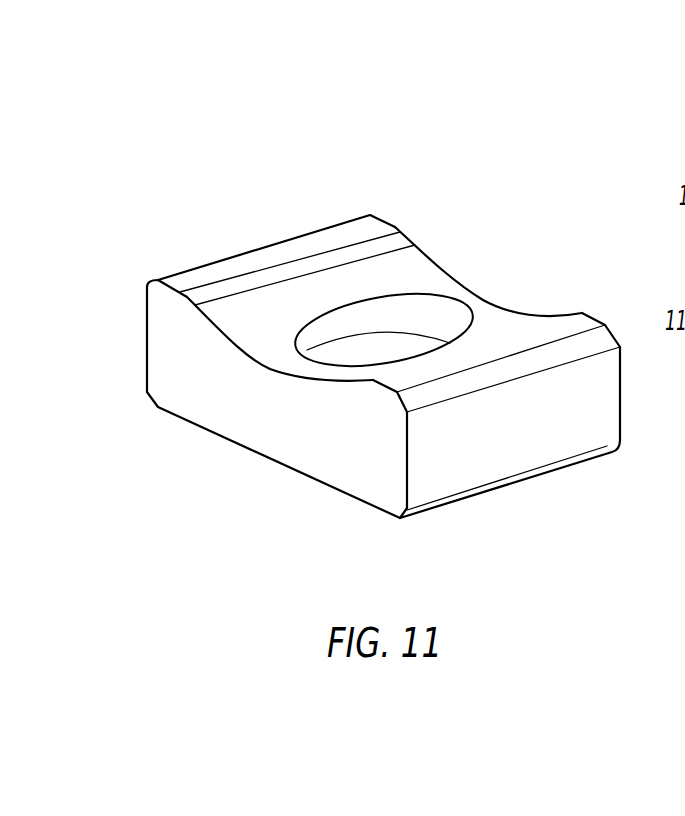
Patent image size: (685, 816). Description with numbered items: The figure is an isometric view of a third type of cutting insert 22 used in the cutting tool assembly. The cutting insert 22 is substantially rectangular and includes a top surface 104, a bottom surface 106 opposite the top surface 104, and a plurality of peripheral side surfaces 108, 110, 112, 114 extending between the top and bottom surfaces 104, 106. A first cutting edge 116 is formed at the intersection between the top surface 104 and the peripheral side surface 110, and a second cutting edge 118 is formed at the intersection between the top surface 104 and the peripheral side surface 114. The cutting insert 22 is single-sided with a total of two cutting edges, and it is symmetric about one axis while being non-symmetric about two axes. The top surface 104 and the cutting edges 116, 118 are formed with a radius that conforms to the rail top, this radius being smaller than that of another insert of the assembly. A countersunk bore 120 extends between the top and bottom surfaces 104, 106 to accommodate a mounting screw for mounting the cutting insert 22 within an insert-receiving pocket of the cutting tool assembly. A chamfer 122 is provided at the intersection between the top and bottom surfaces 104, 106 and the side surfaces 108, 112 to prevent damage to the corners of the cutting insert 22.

The cutting insert 22 is at (210, 205).
The top surface 104 is at (365, 275).
The bottom surface 106 is at (302, 478).
The peripheral side surface 108 is at (498, 452).
The peripheral side surface 110 is at (482, 273).
The peripheral side surface 112 is at (312, 222).
The peripheral side surface 114 is at (205, 403).
The first cutting edge 116 is at (428, 257).
The second cutting edge 118 is at (273, 368).
The countersunk bore 120 is at (333, 317).
The chamfer 122 is at (157, 285).